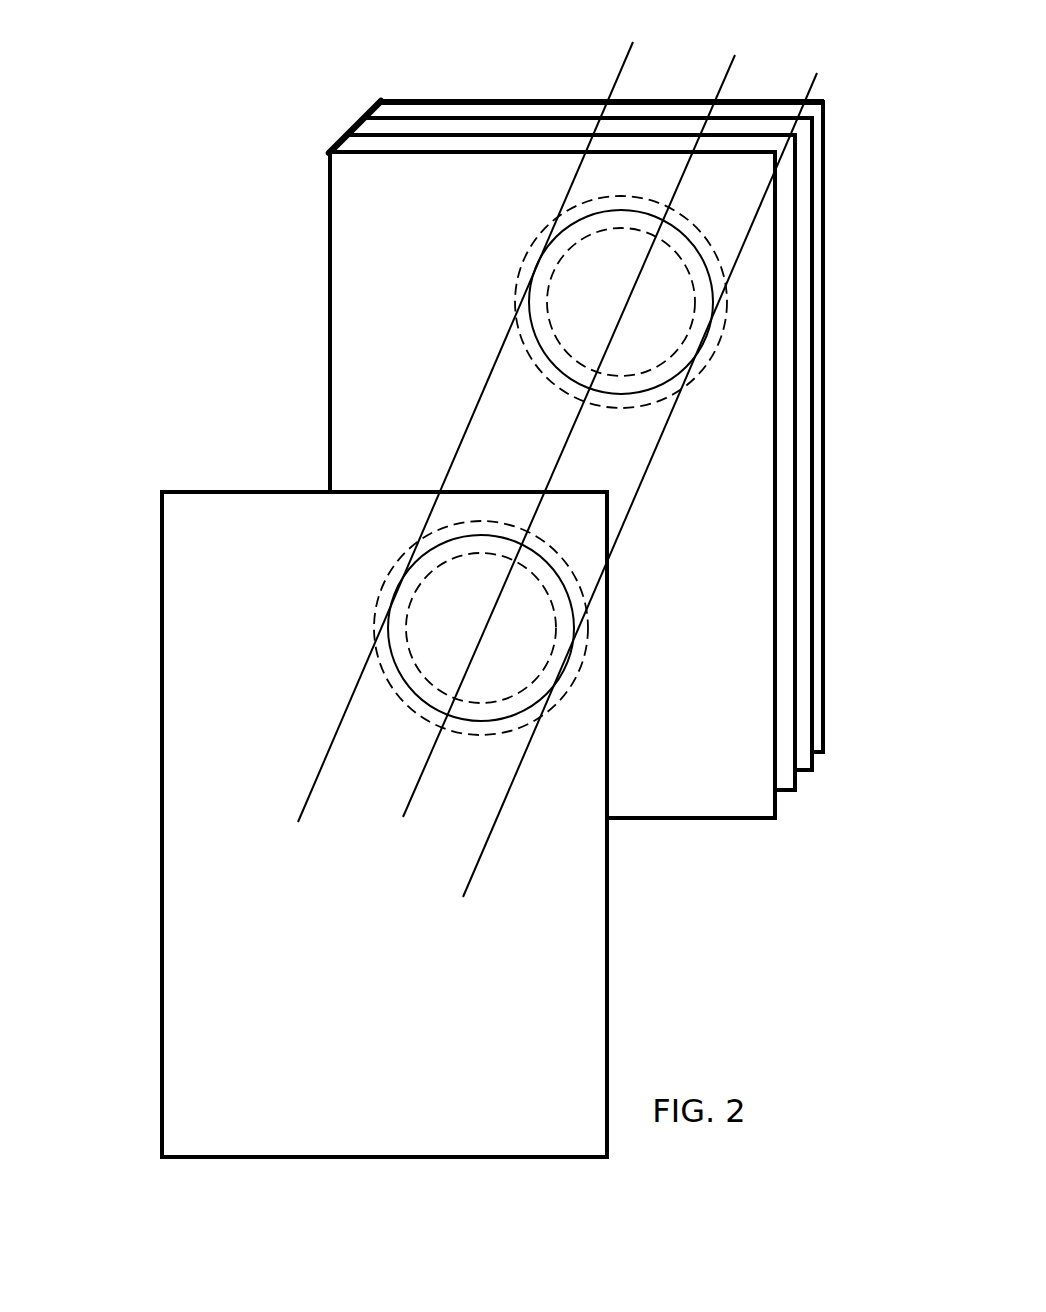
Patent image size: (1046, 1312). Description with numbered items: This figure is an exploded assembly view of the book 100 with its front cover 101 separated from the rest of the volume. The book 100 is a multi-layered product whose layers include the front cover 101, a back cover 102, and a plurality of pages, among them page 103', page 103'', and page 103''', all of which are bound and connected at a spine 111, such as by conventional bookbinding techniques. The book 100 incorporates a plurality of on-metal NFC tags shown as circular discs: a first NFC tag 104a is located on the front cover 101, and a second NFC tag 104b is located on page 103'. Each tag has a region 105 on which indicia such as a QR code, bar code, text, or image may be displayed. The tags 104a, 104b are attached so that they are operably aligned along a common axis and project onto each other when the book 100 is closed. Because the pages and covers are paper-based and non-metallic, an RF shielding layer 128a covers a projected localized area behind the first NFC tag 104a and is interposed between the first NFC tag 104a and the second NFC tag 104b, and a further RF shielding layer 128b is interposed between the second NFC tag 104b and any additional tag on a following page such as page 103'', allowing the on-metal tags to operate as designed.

The book 100 is at (216, 349).
The front cover 101 is at (210, 547).
The back cover 102 is at (560, 93).
The page 103' is at (485, 485).
The page 103'' is at (571, 412).
The third intermediate panel 103''' is at (588, 402).
The spine 111 is at (375, 102).
The region 105 is at (673, 248).
The first NFC tag 104a is at (413, 697).
The second NFC tag 104b is at (545, 355).
The RF shielding layer 128a is at (375, 612).
The RF shielding layer 128b is at (522, 267).